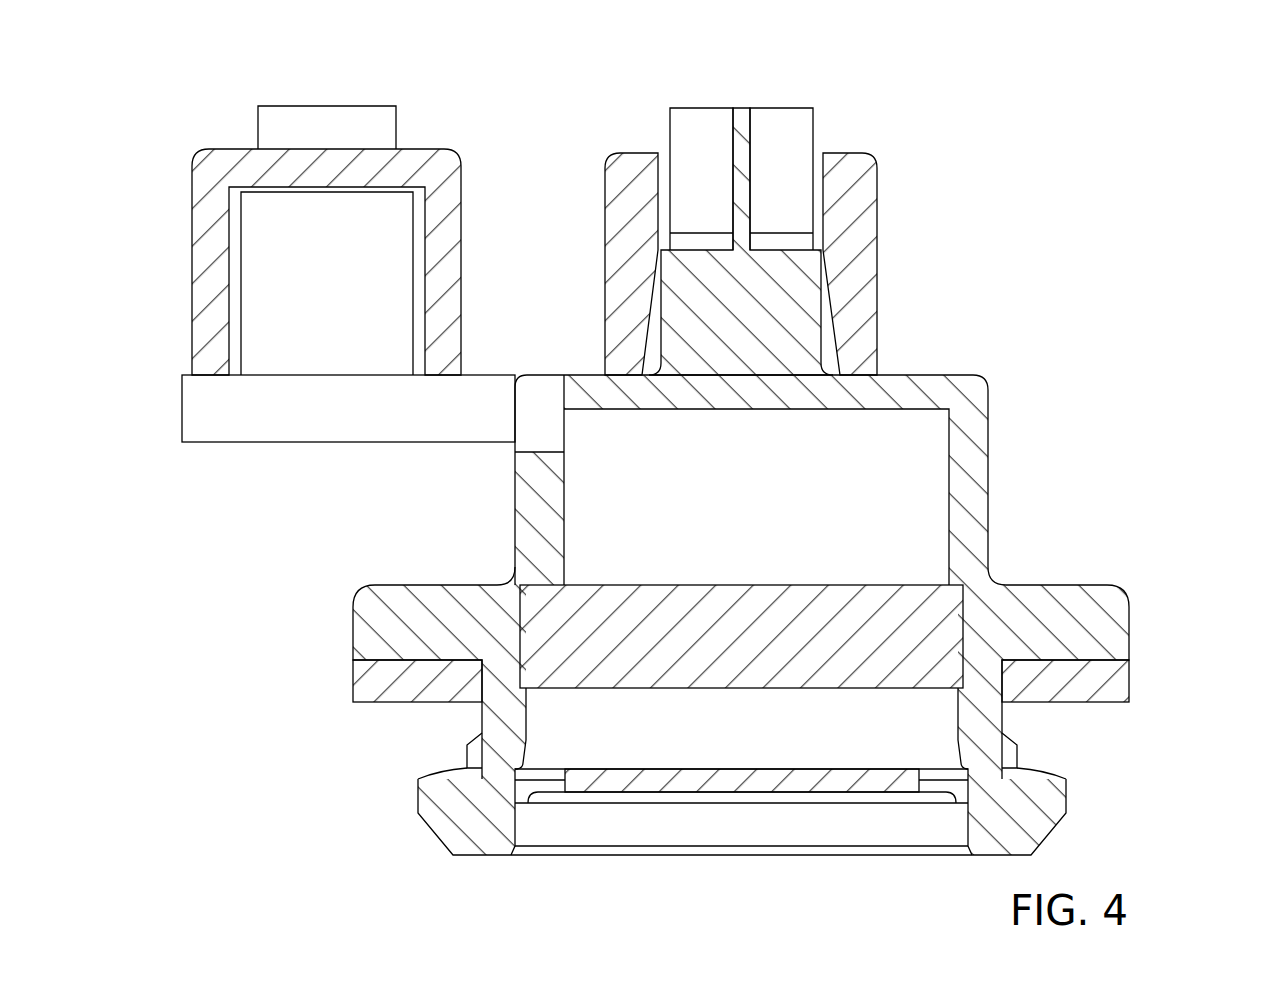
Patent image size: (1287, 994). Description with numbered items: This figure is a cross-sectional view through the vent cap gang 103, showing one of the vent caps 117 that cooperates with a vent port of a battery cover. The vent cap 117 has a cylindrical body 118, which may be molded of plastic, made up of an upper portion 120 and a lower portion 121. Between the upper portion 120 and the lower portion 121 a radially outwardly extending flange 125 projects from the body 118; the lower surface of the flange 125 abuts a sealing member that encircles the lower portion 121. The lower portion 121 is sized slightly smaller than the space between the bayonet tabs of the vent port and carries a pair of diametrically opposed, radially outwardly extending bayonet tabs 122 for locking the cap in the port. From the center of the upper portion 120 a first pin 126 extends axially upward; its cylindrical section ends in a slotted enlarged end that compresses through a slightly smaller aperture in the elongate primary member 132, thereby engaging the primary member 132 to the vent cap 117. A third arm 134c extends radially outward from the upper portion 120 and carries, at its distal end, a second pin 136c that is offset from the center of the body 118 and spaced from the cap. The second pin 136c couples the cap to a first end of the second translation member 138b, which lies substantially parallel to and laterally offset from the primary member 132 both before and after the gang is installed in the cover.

The vent cap gang 103 is at (1052, 58).
The vent cap 117 is at (343, 635).
The cylindrical body 118 is at (505, 501).
The upper portion 120 is at (978, 503).
The lower portion 121 is at (1003, 718).
The bayonet tab 122 is at (417, 795).
The flange 125 is at (1115, 638).
The first pin 126 is at (783, 122).
The primary member 132 is at (860, 265).
The third arm 134c is at (258, 413).
The second pin 136c is at (328, 122).
The second translation member 138b is at (443, 242).